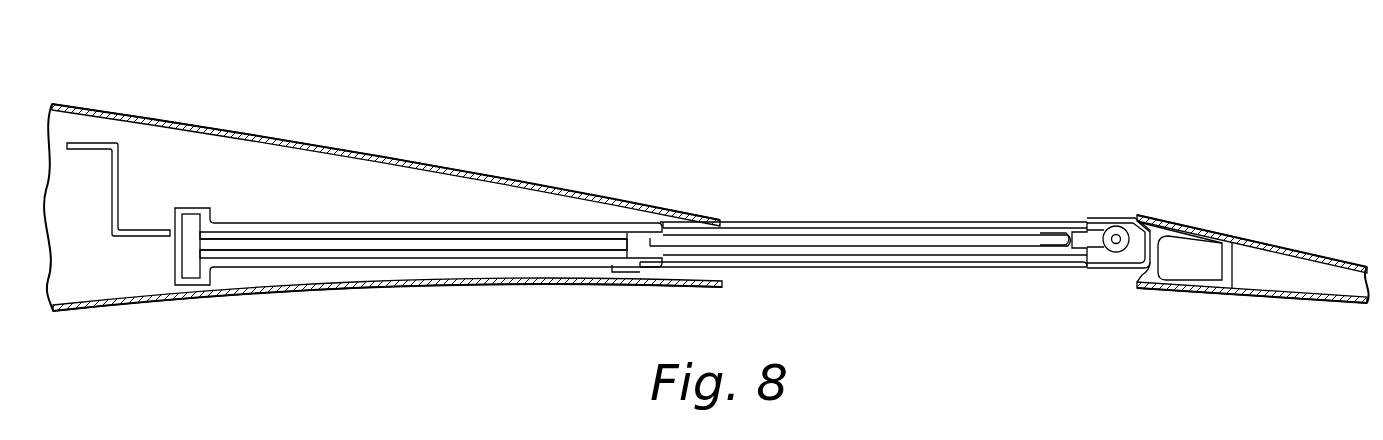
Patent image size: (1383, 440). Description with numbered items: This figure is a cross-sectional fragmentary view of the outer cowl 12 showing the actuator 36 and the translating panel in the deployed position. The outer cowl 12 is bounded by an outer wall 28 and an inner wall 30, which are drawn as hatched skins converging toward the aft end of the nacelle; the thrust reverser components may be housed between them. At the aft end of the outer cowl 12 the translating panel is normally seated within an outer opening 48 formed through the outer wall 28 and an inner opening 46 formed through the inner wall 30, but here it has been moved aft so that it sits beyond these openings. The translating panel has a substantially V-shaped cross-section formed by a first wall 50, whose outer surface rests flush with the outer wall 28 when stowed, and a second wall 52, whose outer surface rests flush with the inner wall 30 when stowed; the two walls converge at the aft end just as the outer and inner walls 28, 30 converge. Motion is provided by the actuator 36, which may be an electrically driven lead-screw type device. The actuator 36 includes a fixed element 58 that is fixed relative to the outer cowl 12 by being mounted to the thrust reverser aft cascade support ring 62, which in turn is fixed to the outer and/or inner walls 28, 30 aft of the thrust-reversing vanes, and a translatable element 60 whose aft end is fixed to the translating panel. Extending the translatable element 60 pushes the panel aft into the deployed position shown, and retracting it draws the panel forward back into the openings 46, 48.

The outer cowl 12 is at (115, 65).
The outer wall 28 is at (320, 143).
The inner wall 30 is at (428, 290).
The actuator 36 is at (250, 221).
The fixed element 58 is at (267, 262).
The aft cascade support ring 62 is at (133, 236).
The outer opening 48 is at (903, 207).
The inner opening 46 is at (893, 283).
The translatable element 60 is at (1062, 250).
The first wall 50 is at (1282, 242).
The second wall 52 is at (1287, 298).